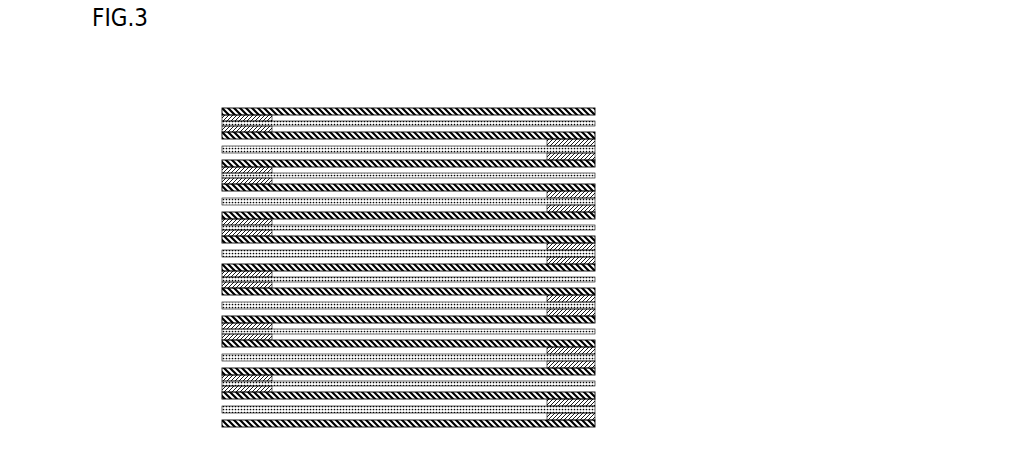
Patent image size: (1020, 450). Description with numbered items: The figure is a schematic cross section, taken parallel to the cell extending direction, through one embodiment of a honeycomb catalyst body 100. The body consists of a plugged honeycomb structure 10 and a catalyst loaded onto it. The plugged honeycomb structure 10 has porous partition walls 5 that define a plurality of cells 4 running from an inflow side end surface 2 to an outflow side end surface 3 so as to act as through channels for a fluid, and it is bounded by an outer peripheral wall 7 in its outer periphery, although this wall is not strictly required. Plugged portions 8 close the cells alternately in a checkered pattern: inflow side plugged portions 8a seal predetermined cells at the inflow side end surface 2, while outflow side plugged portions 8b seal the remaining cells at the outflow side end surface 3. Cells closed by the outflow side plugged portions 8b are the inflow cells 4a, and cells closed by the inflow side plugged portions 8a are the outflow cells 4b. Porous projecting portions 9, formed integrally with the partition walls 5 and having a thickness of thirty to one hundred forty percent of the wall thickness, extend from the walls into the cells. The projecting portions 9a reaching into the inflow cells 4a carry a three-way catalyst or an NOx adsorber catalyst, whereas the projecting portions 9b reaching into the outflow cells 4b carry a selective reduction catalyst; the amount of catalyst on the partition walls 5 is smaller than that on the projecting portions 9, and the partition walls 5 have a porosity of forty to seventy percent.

The honeycomb catalyst body 100 is at (641, 54).
The plugged honeycomb structure 10 is at (505, 108).
The outer peripheral wall 7 is at (422, 107).
The inflow side end surface 2 is at (222, 267).
The outflow side end surface 3 is at (595, 383).
The partition wall 5 is at (595, 345).
The cell 4 is at (409, 152).
The inflow cell 4a is at (246, 144).
The outflow cell 4b is at (572, 170).
The plugged portion 8 is at (443, 291).
The inflow side plugged portion 8a is at (222, 327).
The outflow side plugged portion 8b is at (595, 248).
The projecting portion 9 is at (400, 259).
The inflow cell side projecting portion 9a is at (595, 308).
The outflow cell side projecting portion 9b is at (223, 228).